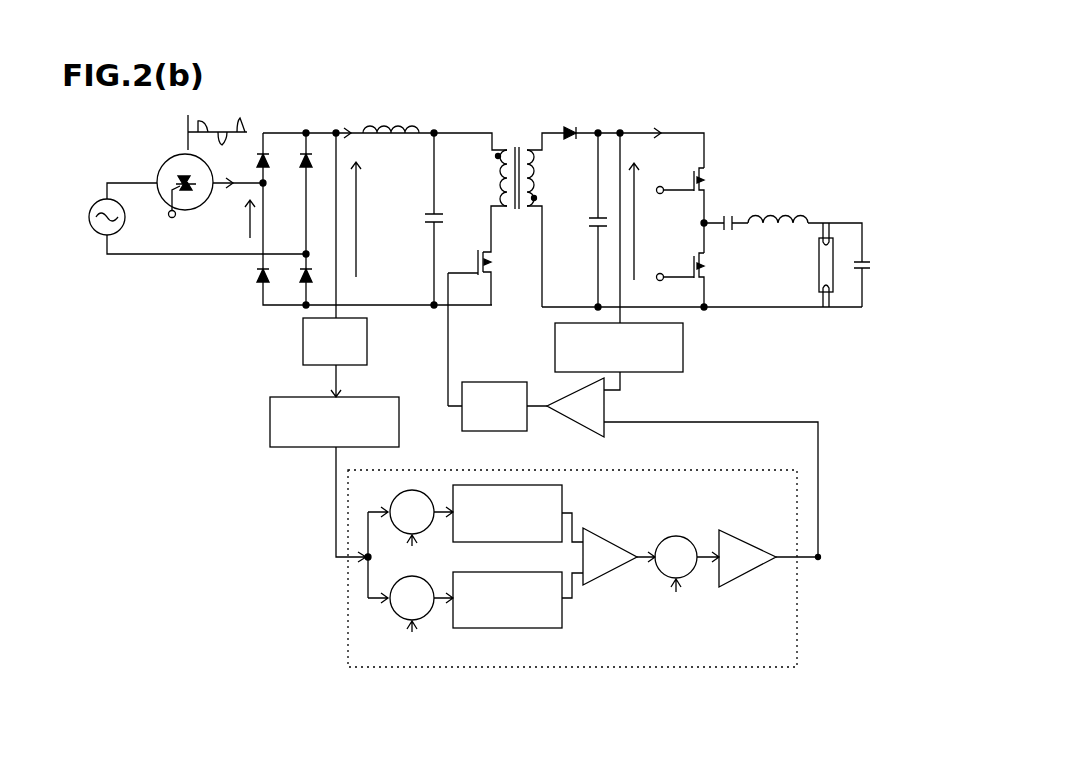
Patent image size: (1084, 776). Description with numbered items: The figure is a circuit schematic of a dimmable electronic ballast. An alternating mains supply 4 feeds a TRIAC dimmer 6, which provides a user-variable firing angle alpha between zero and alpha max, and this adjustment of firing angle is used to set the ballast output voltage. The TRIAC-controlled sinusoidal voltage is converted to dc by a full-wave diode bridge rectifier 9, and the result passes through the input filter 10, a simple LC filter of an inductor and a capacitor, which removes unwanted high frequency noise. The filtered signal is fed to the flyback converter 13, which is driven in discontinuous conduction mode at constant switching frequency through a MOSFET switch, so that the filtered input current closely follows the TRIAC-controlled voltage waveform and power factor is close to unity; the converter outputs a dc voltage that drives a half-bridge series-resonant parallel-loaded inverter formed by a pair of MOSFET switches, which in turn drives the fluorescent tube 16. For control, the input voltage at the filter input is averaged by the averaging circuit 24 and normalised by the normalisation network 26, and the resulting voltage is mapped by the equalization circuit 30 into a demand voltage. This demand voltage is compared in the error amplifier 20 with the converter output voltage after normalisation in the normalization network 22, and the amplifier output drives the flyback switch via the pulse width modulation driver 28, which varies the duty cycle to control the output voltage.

The alternating mains supply 4 is at (95, 203).
The TRIAC dimmer 6 is at (160, 166).
The full-wave diode bridge rectifier 9 is at (283, 130).
The input filter 10 is at (419, 127).
The flyback converter 13 is at (501, 148).
The fluorescent tube 16 is at (832, 252).
The error amplifier 20 is at (581, 426).
The normalization network 22 is at (683, 340).
The averaging circuit 24 is at (303, 335).
The normalisation network 26 is at (270, 412).
The pulse width modulation driver 28 is at (480, 382).
The equalization circuit 30 is at (695, 667).